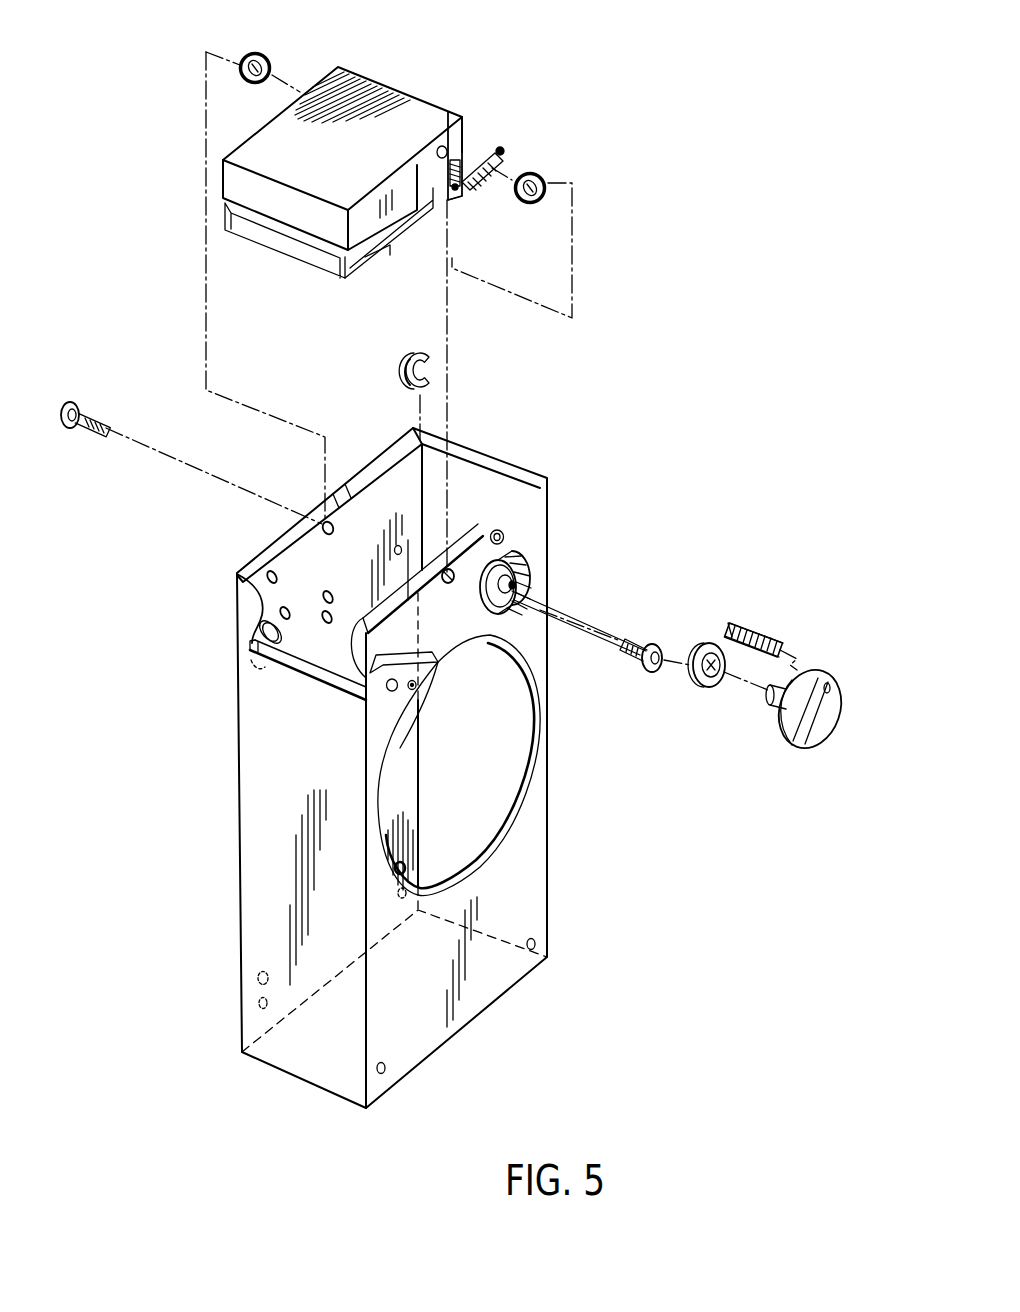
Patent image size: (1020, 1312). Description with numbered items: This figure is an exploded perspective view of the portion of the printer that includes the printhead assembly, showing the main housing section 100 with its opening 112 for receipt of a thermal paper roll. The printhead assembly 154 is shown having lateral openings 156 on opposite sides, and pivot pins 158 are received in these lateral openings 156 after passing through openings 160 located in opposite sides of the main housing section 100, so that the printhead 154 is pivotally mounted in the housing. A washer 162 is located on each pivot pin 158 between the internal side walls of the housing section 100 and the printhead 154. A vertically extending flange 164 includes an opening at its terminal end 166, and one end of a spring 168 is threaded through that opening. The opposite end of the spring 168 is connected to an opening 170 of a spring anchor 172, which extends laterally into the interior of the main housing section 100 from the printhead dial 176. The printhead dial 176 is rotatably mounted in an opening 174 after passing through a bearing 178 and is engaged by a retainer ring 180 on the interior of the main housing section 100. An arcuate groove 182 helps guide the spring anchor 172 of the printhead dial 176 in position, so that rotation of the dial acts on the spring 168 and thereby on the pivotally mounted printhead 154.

The main housing section 100 is at (564, 915).
The opening 112 is at (497, 768).
The printhead assembly 154 is at (336, 170).
The lateral openings 156 is at (448, 137).
The pivot pins 158 is at (78, 402).
The openings 160 is at (322, 530).
The washer 162 is at (273, 66).
The vertically extending flange 164 is at (453, 204).
The terminal end 166 is at (463, 190).
The spring 168 is at (486, 152).
The opening 170 is at (737, 623).
The spring anchor 172 is at (770, 637).
The opening 174 is at (542, 612).
The printhead dial 176 is at (828, 722).
The bearing 178 is at (714, 683).
The retainer ring 180 is at (433, 368).
The arcuate groove 182 is at (530, 560).